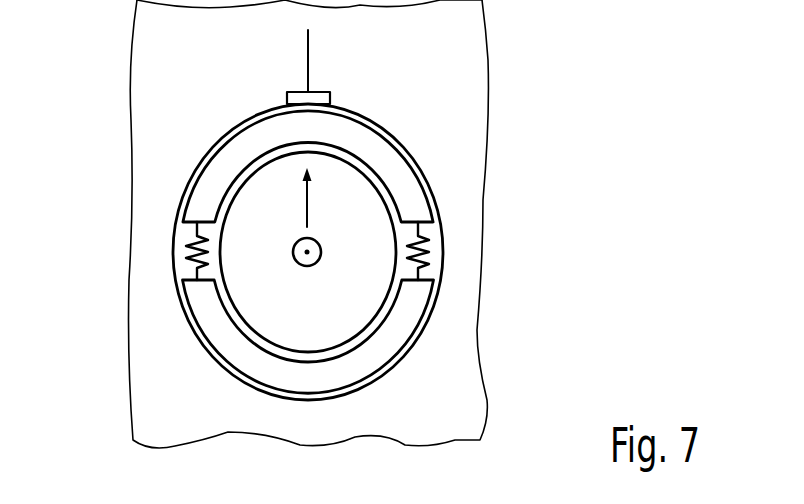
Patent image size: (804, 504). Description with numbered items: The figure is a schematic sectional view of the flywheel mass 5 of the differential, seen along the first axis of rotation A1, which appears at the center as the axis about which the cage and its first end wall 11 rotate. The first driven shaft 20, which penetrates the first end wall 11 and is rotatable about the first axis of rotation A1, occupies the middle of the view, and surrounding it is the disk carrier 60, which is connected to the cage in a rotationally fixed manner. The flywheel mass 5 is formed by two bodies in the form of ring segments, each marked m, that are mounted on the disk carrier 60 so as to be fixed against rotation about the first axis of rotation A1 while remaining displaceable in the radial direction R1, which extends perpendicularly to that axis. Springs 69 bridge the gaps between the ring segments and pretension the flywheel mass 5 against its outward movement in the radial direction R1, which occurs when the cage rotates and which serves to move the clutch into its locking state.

The first end wall 11 is at (153, 62).
The first driven shaft 20 is at (263, 185).
The disk carrier 60 is at (383, 124).
The flywheel mass 5 is at (390, 328).
The springs 69 is at (192, 236).
The first axis of rotation A1 is at (297, 264).
The radial direction R1 is at (324, 197).
The mass m is at (309, 247).